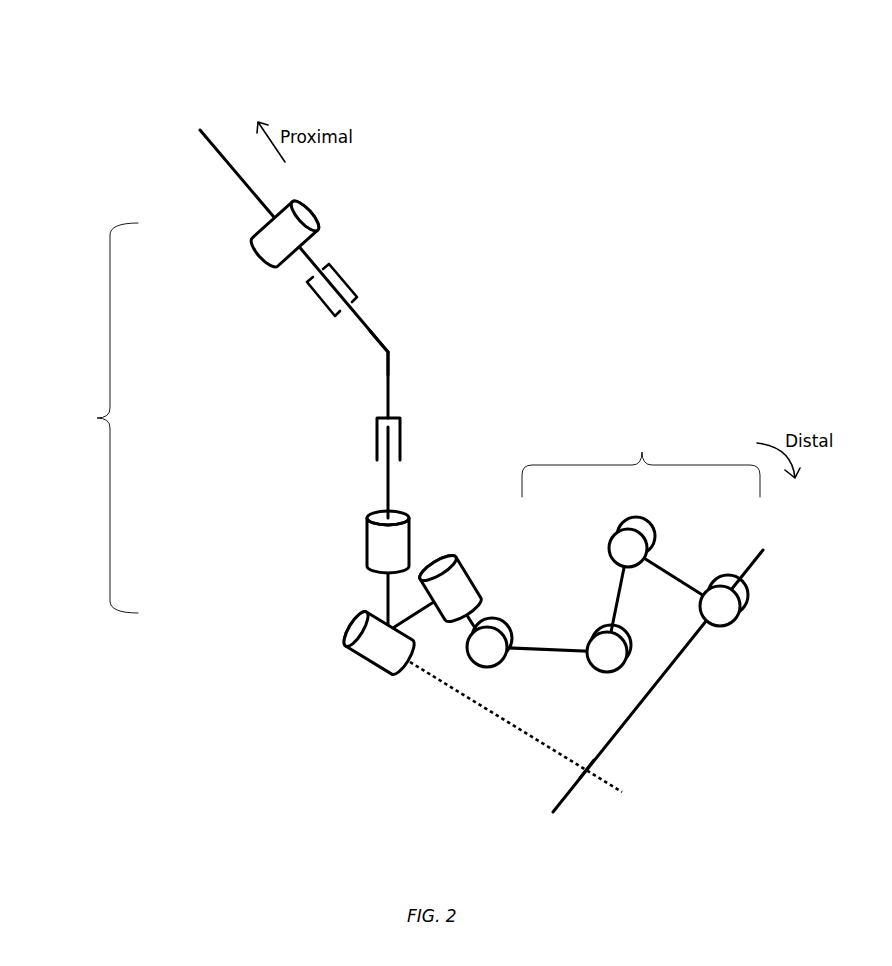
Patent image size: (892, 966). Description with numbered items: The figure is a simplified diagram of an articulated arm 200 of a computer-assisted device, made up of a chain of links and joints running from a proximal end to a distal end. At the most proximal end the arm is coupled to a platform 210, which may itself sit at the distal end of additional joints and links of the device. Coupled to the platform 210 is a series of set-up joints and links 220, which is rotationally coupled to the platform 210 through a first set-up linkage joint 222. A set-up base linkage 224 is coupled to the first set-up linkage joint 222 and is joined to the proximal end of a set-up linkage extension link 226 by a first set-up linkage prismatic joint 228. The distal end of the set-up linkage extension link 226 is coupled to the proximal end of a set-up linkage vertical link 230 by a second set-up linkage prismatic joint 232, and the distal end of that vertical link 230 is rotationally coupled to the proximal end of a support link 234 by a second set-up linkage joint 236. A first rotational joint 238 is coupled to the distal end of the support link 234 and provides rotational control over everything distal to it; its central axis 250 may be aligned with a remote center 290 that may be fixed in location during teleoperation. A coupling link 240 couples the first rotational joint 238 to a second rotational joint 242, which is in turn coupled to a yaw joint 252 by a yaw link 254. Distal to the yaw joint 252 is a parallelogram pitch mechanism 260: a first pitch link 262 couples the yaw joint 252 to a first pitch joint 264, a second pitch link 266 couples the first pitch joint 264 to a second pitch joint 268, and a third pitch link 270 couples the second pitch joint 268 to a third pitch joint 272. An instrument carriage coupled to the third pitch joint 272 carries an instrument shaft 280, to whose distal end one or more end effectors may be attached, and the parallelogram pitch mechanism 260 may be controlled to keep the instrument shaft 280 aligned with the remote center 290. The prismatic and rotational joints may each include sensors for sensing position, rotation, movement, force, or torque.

The articulated arm 200 is at (135, 59).
The platform 210 is at (233, 170).
The set-up joints and links 220 is at (87, 418).
The first set-up linkage joint 222 is at (312, 218).
The set-up base linkage 224 is at (308, 267).
The set-up linkage extension link 226 is at (389, 353).
The first set-up linkage prismatic joint 228 is at (342, 281).
The set-up linkage vertical link 230 is at (390, 490).
The second set-up linkage prismatic joint 232 is at (375, 442).
The support link 234 is at (386, 598).
The second set-up linkage joint 236 is at (367, 547).
The first rotational joint 238 is at (364, 660).
The coupling link 240 is at (412, 607).
The second rotational joint 242 is at (477, 592).
The central axis 250 is at (478, 702).
The yaw joint 252 is at (476, 664).
The yaw link 254 is at (478, 613).
The parallelogram pitch mechanism 260 is at (641, 459).
The first pitch link 262 is at (552, 647).
The first pitch joint 264 is at (612, 673).
The second pitch link 266 is at (620, 590).
The second pitch joint 268 is at (617, 528).
The third pitch link 270 is at (677, 566).
The third pitch joint 272 is at (743, 620).
The instrument shaft 280 is at (670, 668).
The remote center 290 is at (587, 772).